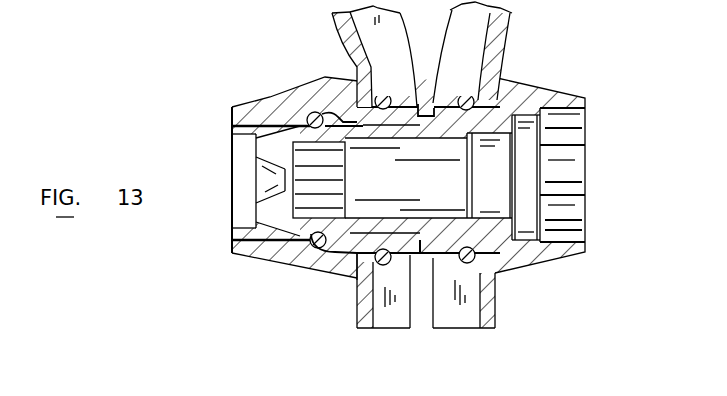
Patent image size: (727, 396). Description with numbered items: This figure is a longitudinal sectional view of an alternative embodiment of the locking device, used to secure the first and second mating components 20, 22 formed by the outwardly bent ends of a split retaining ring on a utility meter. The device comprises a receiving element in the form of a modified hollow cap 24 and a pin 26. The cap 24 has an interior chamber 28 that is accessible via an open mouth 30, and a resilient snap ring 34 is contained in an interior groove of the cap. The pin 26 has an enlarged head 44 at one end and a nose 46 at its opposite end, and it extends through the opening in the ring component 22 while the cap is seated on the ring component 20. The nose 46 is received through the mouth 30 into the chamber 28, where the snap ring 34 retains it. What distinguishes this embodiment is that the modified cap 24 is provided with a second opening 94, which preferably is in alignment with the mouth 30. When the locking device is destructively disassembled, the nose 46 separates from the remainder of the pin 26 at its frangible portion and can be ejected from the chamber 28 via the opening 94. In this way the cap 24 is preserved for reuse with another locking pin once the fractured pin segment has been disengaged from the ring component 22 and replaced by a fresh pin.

The first mating component 20 is at (400, 328).
The second mating component 22 is at (458, 323).
The hollow cap 24 is at (260, 252).
The pin 26 is at (424, 130).
The interior chamber 28 is at (232, 165).
The open mouth 30 is at (337, 88).
The resilient snap ring 34 is at (312, 268).
The enlarged head 44 is at (544, 100).
The nose 46 is at (300, 99).
The second opening 94 is at (256, 228).